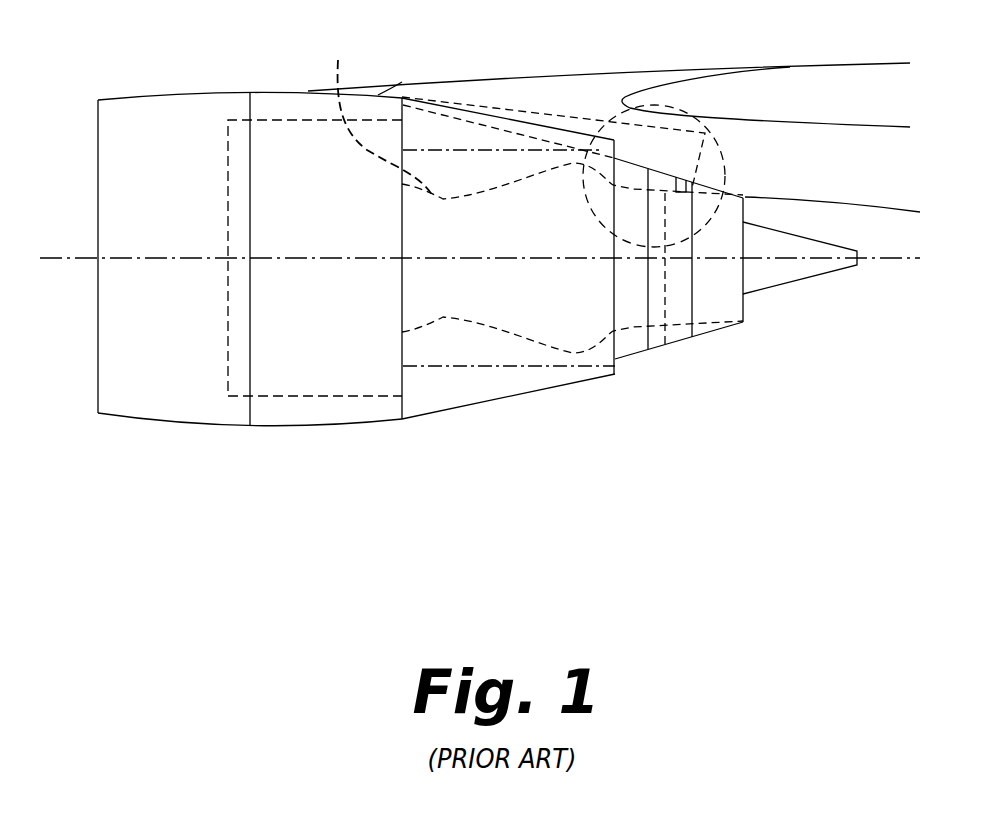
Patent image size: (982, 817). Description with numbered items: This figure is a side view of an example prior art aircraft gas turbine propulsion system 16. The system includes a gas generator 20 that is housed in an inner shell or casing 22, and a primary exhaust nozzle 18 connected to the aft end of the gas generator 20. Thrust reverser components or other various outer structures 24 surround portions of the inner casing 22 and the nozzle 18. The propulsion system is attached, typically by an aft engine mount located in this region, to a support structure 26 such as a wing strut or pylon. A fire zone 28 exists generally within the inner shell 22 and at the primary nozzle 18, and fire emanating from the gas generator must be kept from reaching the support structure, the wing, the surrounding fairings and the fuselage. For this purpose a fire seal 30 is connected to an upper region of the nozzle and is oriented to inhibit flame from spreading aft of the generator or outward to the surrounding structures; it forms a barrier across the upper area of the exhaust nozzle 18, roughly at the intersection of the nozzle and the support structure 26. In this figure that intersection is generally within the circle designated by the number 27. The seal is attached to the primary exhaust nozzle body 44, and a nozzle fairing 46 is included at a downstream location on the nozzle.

The gas turbine propulsion system 16 is at (320, 462).
The primary exhaust nozzle 18 is at (744, 329).
The gas generator 20 is at (338, 60).
The inner shell or casing 22 is at (432, 150).
The thrust reverser components or outer structures 24 is at (433, 417).
The support structure 26 is at (513, 97).
The circle 27 is at (724, 152).
The fire zone 28 is at (400, 470).
The fire seal 30 is at (676, 178).
The primary exhaust nozzle body 44 is at (665, 345).
The nozzle fairing 46 is at (707, 333).